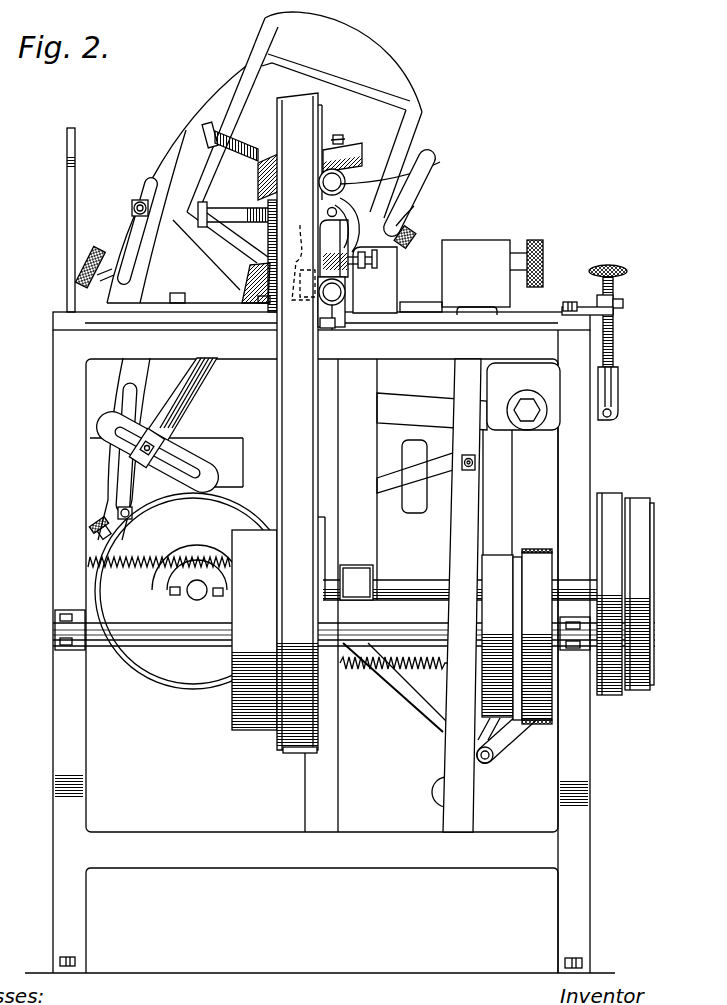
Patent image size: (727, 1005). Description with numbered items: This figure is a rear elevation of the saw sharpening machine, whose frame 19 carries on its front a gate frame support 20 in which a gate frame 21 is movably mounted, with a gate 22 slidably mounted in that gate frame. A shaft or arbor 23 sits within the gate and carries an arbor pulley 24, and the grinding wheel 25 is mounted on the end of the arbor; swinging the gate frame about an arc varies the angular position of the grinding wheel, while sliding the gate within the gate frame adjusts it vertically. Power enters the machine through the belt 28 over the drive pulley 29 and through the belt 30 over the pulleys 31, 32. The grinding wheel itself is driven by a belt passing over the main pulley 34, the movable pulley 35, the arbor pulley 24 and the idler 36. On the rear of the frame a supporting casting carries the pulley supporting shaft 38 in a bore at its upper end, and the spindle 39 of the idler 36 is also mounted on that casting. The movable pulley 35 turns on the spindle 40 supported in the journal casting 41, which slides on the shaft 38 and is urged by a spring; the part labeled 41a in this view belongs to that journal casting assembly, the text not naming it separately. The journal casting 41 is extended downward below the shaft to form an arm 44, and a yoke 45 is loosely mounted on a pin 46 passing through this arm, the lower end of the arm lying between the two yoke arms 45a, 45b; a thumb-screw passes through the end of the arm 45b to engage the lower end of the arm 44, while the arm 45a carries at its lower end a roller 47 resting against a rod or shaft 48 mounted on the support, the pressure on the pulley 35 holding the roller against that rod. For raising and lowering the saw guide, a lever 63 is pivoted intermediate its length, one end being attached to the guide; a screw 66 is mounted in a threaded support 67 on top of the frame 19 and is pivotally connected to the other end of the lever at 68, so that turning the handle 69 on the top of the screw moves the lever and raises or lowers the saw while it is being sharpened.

The frame 19 is at (70, 350).
The gate frame support 20 is at (147, 240).
The gate frame 21 is at (262, 37).
The gate 22 is at (308, 78).
The shaft or arbor 23 is at (240, 135).
The arbor pulley 24 is at (266, 168).
The grinding wheel 25 is at (431, 172).
The belt 28 is at (533, 552).
The drive pulley 29 is at (528, 572).
The belt 30 is at (635, 512).
The pulley 31 is at (651, 643).
The pulley 32 is at (653, 548).
The main pulley 34 is at (322, 551).
The movable pulley 35 is at (275, 156).
The idler 36 is at (270, 233).
The pulley supporting shaft 38 is at (412, 203).
The spindle 39 is at (230, 222).
The spindle 40 is at (250, 143).
The journal casting 41 is at (378, 178).
The bearing block 41a is at (350, 154).
The arm 44 is at (332, 237).
The yoke 45 is at (327, 200).
The arm of yoke 45a is at (344, 279).
The arm of yoke 45b is at (400, 249).
The pin 46 is at (327, 213).
The roller 47 is at (316, 301).
The rod or shaft 48 is at (328, 323).
The lever 63 is at (408, 403).
The threaded rod 66 is at (613, 353).
The threaded support 67 is at (614, 306).
The pivotal connection 68 is at (616, 416).
The handle 69 is at (606, 266).